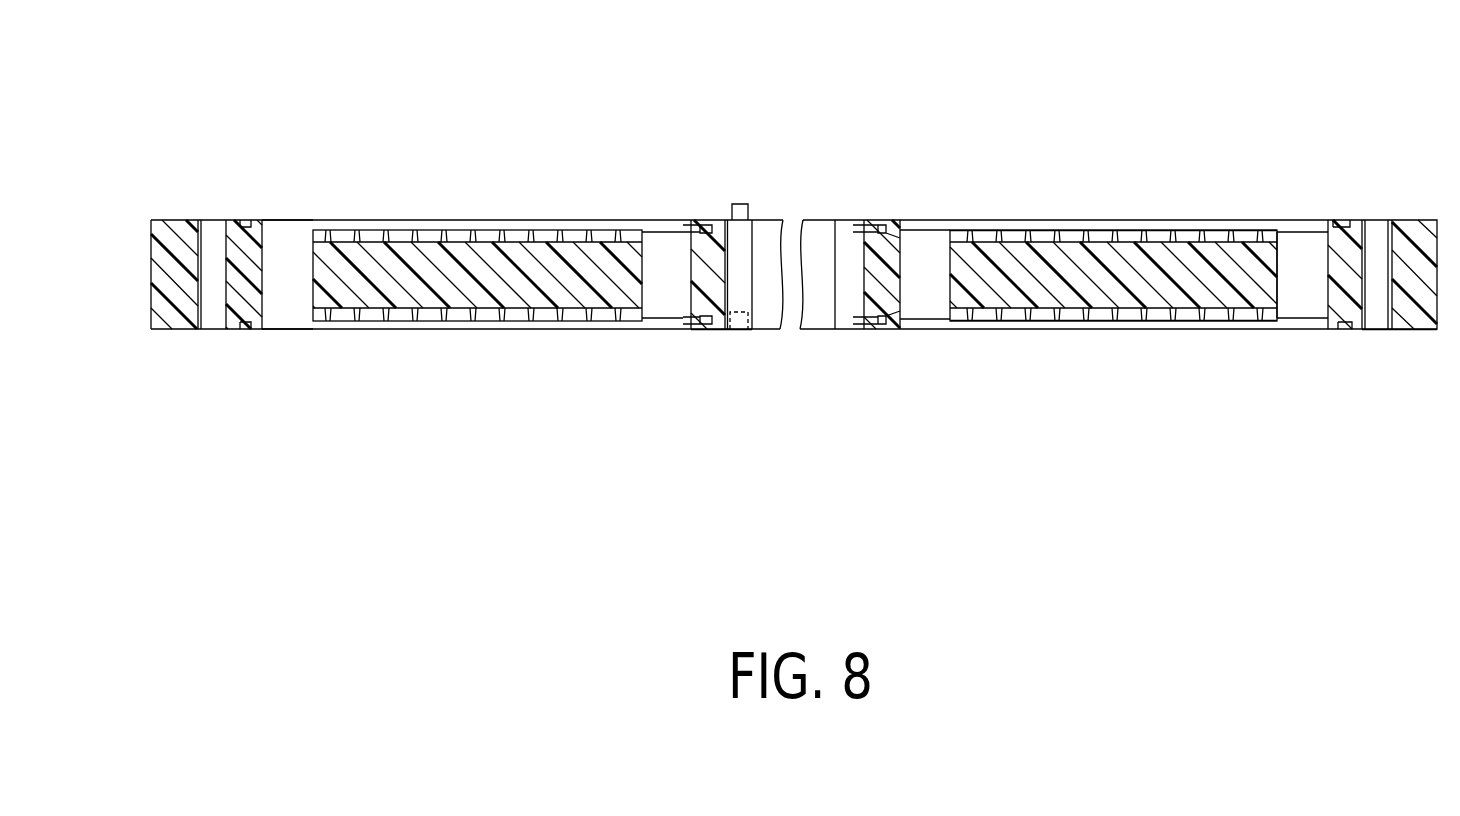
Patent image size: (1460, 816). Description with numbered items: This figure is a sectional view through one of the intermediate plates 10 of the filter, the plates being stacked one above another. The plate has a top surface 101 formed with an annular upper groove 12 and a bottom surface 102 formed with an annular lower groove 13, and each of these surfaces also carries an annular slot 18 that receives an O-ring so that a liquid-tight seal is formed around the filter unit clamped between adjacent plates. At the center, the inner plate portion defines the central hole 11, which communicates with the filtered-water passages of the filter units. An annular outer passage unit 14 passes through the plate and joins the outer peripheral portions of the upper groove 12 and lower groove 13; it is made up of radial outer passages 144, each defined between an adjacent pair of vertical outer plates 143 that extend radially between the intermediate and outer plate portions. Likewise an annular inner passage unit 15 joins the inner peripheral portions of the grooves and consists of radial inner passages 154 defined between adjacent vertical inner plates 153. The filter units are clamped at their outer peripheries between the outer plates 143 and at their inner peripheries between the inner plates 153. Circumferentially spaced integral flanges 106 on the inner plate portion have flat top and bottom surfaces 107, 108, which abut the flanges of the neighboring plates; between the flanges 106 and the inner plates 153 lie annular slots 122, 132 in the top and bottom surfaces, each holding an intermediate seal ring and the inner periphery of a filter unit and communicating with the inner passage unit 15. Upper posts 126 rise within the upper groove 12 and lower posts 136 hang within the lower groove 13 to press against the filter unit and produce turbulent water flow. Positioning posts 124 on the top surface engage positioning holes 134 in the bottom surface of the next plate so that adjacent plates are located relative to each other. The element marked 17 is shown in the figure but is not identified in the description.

The intermediate plate 10 is at (176, 336).
The central hole 11 is at (775, 238).
The annular upper groove 12 is at (1030, 225).
The annular lower groove 13 is at (1010, 322).
The annular outer passage unit 14 is at (1264, 361).
The annular inner passage unit 15 is at (498, 353).
The end cap 17 is at (205, 223).
The annular slot 18 is at (243, 223).
The top surface 101 is at (1422, 220).
The bottom surface 102 is at (1422, 330).
The flange 106 is at (728, 273).
The top surface of flange 107 is at (713, 228).
The bottom surface of flange 108 is at (722, 330).
The annular slot 122 is at (915, 238).
The positioning post 124 is at (740, 203).
The upper post 126 is at (1167, 227).
The annular slot 132 is at (893, 306).
The positioning hole 134 is at (745, 330).
The lower post 136 is at (1135, 322).
The outer plate 143 is at (1302, 227).
The radial outer passage 144 is at (1297, 300).
The inner plate 153 is at (648, 230).
The radial inner passage 154 is at (665, 308).